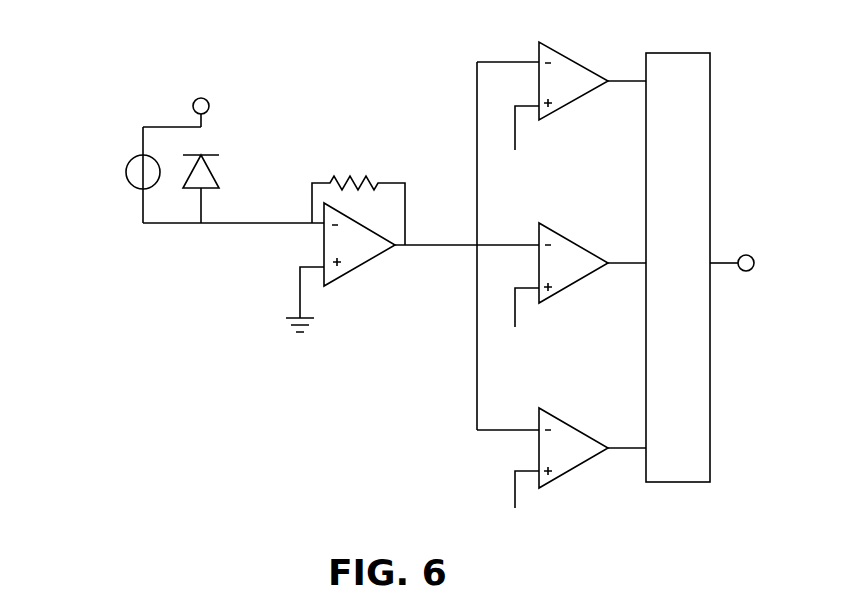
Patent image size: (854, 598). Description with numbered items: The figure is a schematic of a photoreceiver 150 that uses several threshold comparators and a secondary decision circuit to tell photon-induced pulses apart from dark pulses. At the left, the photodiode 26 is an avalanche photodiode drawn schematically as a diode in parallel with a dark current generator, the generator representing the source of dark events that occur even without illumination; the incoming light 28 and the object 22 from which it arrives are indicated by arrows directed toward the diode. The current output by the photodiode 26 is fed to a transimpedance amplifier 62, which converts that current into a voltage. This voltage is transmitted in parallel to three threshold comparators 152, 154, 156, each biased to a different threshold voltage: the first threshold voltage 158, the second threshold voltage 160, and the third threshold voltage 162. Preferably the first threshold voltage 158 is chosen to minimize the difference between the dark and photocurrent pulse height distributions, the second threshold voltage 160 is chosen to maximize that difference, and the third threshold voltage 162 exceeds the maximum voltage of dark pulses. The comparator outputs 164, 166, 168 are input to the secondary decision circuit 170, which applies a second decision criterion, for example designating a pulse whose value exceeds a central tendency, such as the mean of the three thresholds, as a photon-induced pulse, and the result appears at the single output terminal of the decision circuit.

The object/analyte being sensed 22 is at (253, 146).
The photodiode 26 is at (126, 175).
The light 28 is at (222, 134).
The transimpedance amplifier 62 is at (372, 262).
The photoreceiver 150 is at (196, 259).
The threshold comparator 152 is at (554, 48).
The threshold comparator 154 is at (557, 232).
The threshold comparator 156 is at (555, 415).
The threshold voltage Vthn 158 is at (537, 148).
The threshold voltage Vthn+1 160 is at (537, 330).
The threshold voltage Vthn+2 162 is at (537, 516).
The threshold comparator output 164 is at (633, 78).
The threshold comparator output 166 is at (632, 260).
The threshold comparator output 168 is at (632, 447).
The secondary decision circuit 170 is at (711, 152).